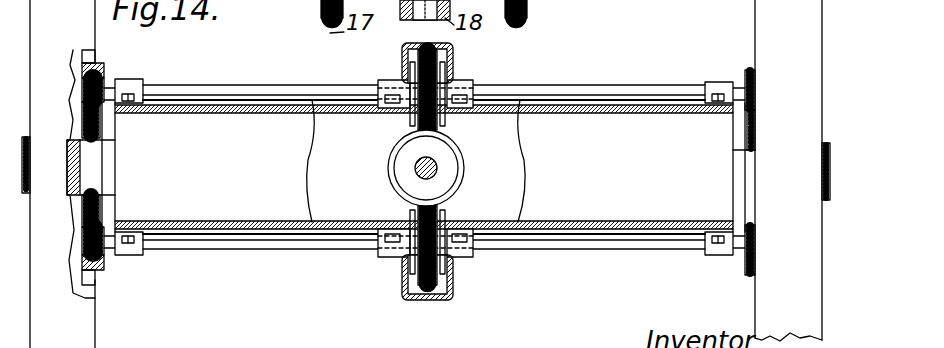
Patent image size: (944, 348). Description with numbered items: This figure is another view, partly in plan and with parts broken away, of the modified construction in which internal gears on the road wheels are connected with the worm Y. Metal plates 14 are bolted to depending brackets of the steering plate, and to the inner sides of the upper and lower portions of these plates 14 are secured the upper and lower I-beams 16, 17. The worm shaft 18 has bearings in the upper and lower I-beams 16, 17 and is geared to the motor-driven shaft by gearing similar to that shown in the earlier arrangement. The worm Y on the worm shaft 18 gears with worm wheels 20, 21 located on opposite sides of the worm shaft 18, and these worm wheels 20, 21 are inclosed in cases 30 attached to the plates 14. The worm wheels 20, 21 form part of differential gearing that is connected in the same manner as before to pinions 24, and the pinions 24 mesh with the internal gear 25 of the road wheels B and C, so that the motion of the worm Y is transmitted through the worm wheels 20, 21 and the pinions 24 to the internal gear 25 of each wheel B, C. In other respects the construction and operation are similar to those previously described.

The metal plates 14 is at (340, 100).
The upper I-beam 16 is at (421, 161).
The lower I-beam 17 is at (352, 172).
The worm shaft 18 is at (416, 176).
The worm wheel 20 is at (430, 62).
The worm wheel 21 is at (425, 287).
The pinions 24 is at (100, 78).
The internal gear 25 is at (106, 210).
The cases 30 is at (404, 56).
The worm Y is at (402, 158).
The wheel B is at (58, 174).
The wheel C is at (792, 170).